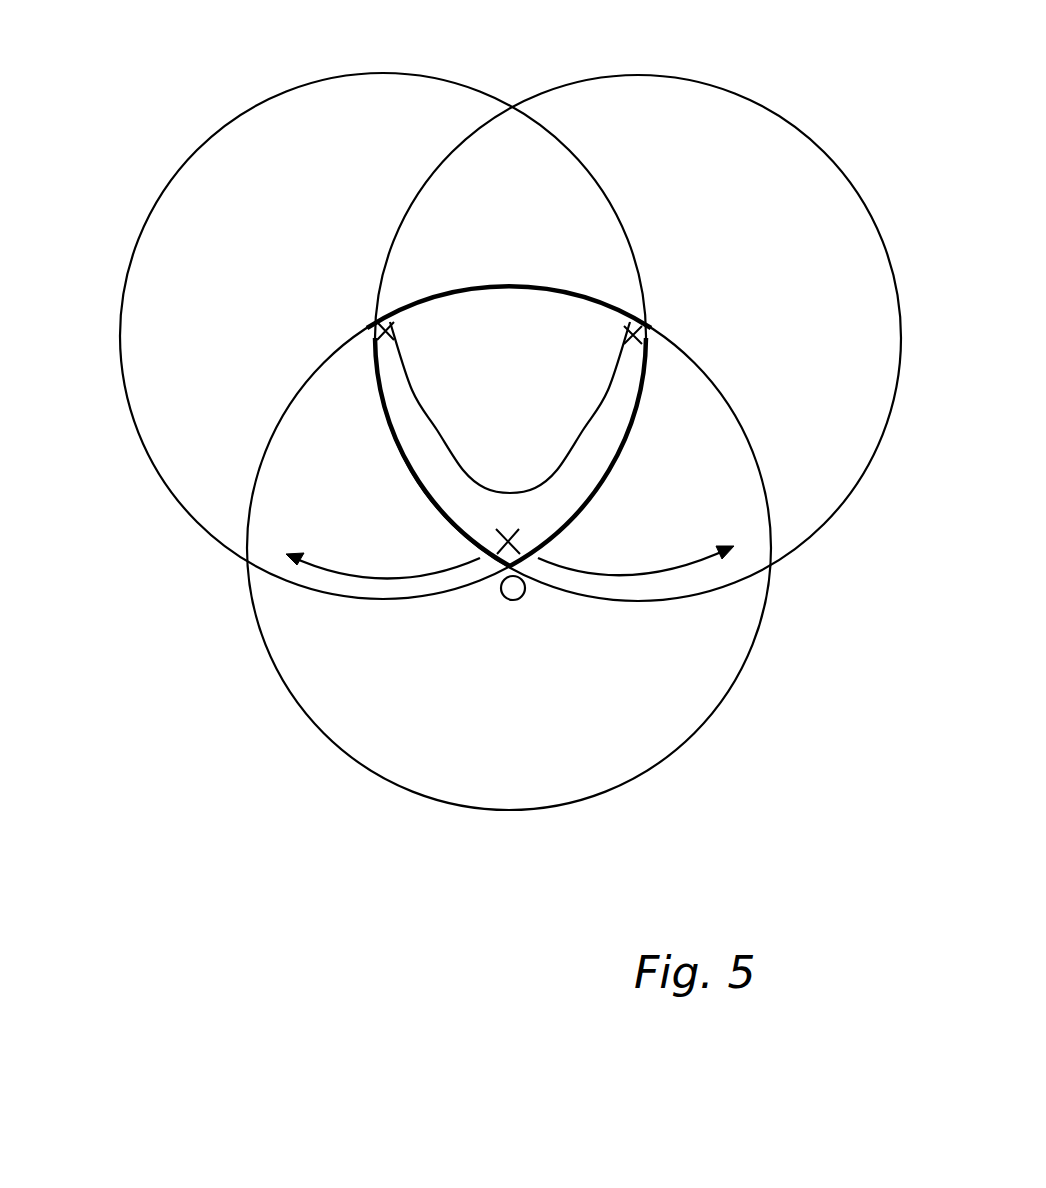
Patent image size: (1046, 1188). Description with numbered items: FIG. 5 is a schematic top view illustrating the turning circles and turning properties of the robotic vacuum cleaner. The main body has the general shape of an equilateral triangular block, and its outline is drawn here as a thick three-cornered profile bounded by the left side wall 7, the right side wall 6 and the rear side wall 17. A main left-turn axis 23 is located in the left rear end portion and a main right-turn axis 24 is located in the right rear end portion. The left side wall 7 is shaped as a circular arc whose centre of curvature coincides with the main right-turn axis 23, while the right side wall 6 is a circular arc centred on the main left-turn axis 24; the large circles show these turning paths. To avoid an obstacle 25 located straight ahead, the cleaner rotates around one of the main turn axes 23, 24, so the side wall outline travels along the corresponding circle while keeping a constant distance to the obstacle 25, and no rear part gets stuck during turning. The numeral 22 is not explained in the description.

The rear side wall 17 is at (498, 308).
The right side wall 6 is at (400, 470).
The left side wall 7 is at (620, 450).
The first apex 22 is at (480, 557).
The main left-turn axis 23 is at (643, 322).
The main right-turn axis 24 is at (386, 325).
The obstacle 25 is at (508, 592).